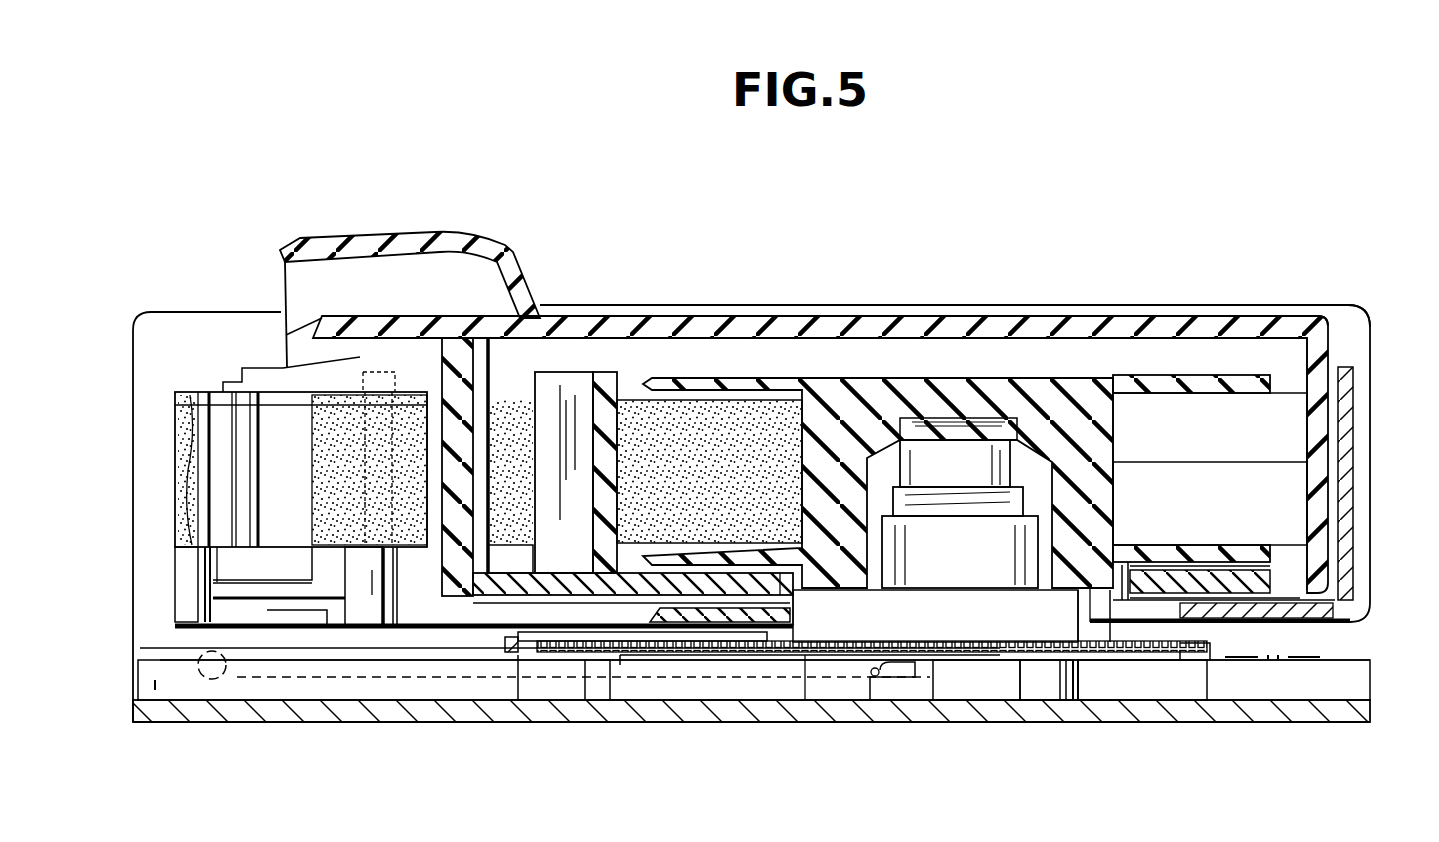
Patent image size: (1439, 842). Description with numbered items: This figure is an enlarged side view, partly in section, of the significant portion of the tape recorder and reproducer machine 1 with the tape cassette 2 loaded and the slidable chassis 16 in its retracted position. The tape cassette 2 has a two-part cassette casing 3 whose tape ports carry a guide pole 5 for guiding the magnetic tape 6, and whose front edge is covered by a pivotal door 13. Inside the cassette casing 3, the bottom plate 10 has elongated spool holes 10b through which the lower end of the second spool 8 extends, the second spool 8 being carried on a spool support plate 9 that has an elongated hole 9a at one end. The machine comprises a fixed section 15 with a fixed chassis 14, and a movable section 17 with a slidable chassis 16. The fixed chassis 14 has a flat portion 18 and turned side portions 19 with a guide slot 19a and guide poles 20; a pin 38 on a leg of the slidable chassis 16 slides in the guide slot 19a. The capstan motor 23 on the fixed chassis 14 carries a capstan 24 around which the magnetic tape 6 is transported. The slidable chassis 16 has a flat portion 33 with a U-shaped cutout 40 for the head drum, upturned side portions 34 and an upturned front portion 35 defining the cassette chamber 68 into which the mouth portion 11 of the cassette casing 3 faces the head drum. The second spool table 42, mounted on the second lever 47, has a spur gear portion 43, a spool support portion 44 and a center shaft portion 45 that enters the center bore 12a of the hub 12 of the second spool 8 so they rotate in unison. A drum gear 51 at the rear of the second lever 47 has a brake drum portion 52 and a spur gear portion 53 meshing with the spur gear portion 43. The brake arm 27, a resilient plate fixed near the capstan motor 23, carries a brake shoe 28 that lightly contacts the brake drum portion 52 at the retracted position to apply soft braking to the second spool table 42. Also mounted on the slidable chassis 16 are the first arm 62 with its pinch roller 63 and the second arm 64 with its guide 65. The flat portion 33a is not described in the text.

The tape recorder and reproducer machine 1 is at (941, 272).
The tape cassette 2 is at (1118, 318).
The cassette casing 3 is at (1030, 320).
The guide pole 5 is at (222, 388).
The magnetic tape 6 is at (175, 452).
The second spool 8 is at (1010, 378).
The spool support plate 9 is at (640, 573).
The elongated hole 9a is at (1120, 570).
The bottom plate 10 is at (1300, 592).
The elongated spool hole 10b is at (1108, 660).
The mouth portion 11 is at (398, 630).
The hub 12 is at (1113, 410).
The center bore 12a is at (1113, 490).
The pivotal door 13 is at (483, 240).
The fixed chassis 14 is at (270, 722).
The fixed section 15 is at (222, 722).
The slidable chassis 16 is at (1235, 303).
The movable section 17 is at (1303, 306).
The flat portion 18 is at (765, 722).
The turned side portion 19 is at (935, 680).
The guide slot 19a is at (875, 680).
The guide pole 20 is at (1078, 720).
The capstan motor 23 is at (680, 660).
The capstan 24 is at (380, 372).
The brake arm 27 is at (510, 655).
The brake shoe 28 is at (528, 655).
The flat portion 33 is at (1233, 612).
The membrane portion 33a is at (810, 660).
The upturned side portion 34 is at (1360, 312).
The upturned front portion 35 is at (1353, 440).
The pin 38 is at (200, 657).
The U-shaped cutout 40 is at (590, 573).
The second spool table 42 is at (940, 425).
The spur gear portion 43 is at (980, 645).
The spool support portion 44 is at (980, 590).
The center shaft portion 45 is at (1113, 462).
The second lever 47 is at (1207, 652).
The drum gear 51 is at (765, 598).
The brake drum portion 52 is at (582, 655).
The spur gear portion 53 is at (612, 660).
The first arm 62 is at (355, 630).
The pinch roller 63 is at (328, 392).
The second arm 64 is at (175, 625).
The guide 65 is at (175, 568).
The cassette chamber 68 is at (1288, 580).